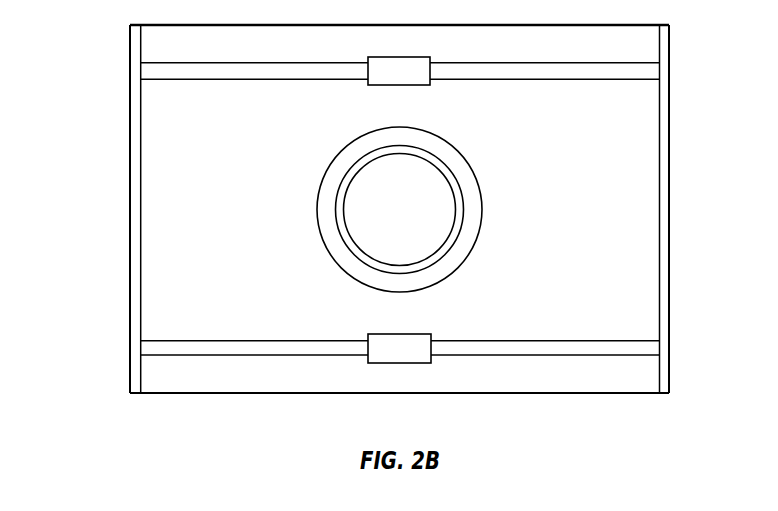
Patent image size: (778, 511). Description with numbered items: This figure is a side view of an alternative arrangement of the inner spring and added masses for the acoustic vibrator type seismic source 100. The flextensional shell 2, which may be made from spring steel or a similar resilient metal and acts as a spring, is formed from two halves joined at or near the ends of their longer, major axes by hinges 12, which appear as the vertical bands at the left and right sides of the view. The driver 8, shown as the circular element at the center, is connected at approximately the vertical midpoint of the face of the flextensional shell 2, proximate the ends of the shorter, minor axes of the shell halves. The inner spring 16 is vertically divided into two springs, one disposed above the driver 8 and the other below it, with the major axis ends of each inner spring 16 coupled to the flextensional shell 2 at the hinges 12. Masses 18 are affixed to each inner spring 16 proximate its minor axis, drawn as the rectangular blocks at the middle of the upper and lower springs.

The acoustic vibrator type seismic source 100 is at (103, 73).
The hinges 12 is at (128, 187).
The flextensional shell 2 is at (332, 375).
The masses 18 is at (383, 87).
The inner spring 16 is at (247, 356).
The driver 8 is at (462, 202).